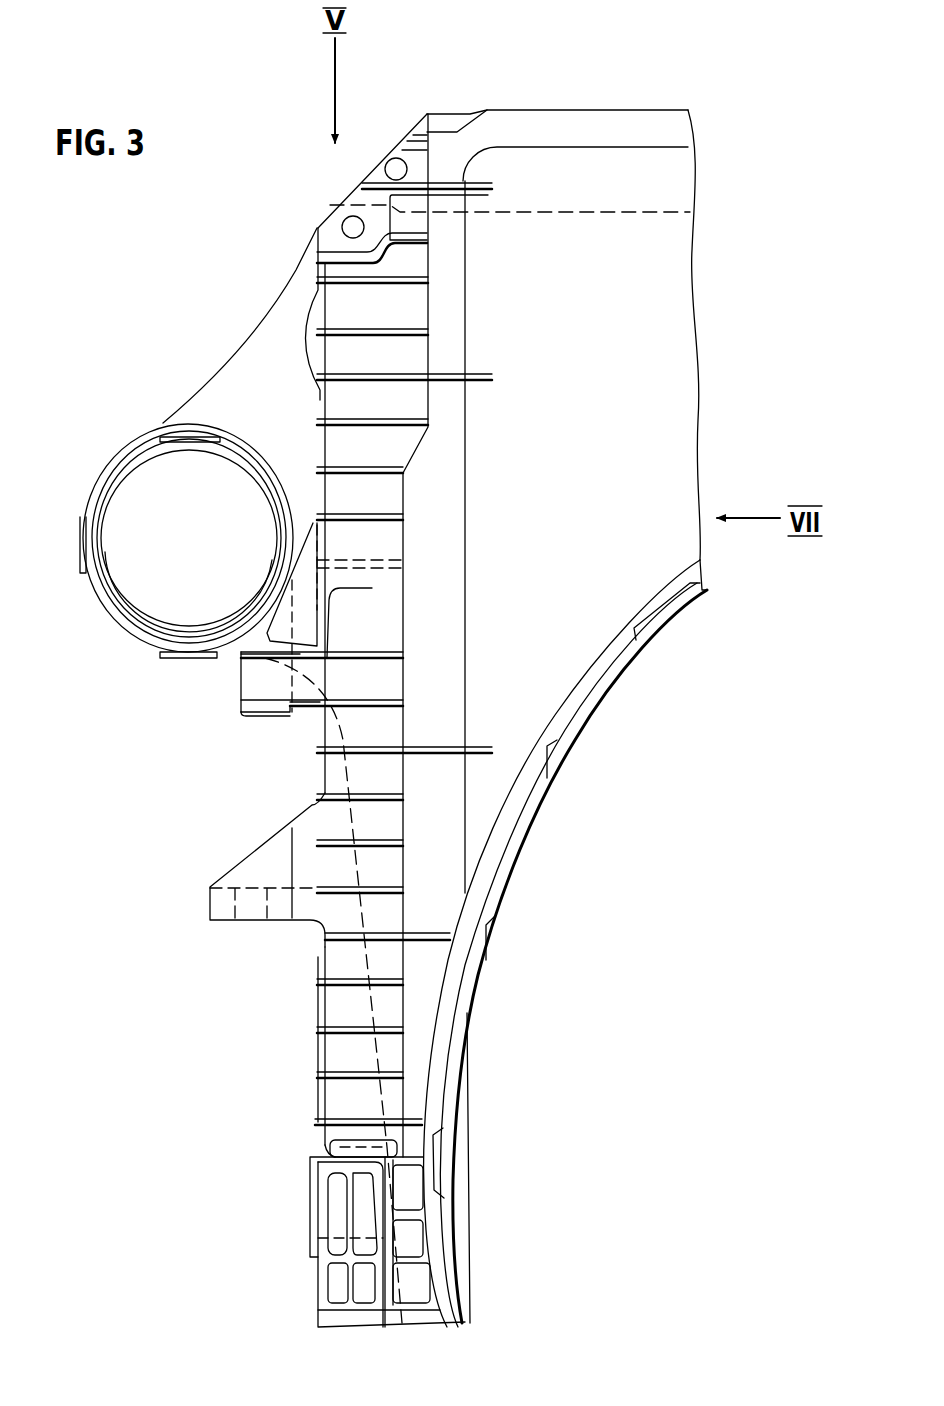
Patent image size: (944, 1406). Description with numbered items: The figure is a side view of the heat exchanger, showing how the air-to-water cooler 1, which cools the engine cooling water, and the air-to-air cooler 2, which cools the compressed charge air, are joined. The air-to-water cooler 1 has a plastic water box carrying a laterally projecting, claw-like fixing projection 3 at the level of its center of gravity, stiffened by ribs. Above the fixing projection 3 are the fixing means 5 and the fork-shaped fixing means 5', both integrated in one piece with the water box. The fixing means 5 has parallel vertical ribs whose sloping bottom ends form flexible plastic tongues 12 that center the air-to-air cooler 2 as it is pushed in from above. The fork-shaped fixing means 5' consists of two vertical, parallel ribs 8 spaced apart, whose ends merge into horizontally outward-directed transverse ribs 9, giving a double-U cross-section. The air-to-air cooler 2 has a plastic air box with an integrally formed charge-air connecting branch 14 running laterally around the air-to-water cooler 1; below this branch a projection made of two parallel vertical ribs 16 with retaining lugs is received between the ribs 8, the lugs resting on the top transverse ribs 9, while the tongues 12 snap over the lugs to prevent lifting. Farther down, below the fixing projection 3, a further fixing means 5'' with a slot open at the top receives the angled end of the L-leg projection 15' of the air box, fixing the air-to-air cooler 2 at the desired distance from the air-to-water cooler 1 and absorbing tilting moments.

The air-to-water cooler 1 is at (513, 147).
The air-to-air cooler 2 is at (257, 400).
The fixing projections 3 is at (215, 907).
The fixing means 5 is at (253, 584).
The fork-shaped fixing means 5' is at (290, 693).
The further fixing means 5'' is at (323, 1126).
The ribs 8 is at (272, 682).
The transverse ribs 9 is at (270, 658).
The flexible plastic tongues 12 is at (285, 627).
The charge-air connecting branches 14 is at (107, 603).
The further projection 15' is at (355, 1242).
The vertical ribs 16 is at (242, 713).